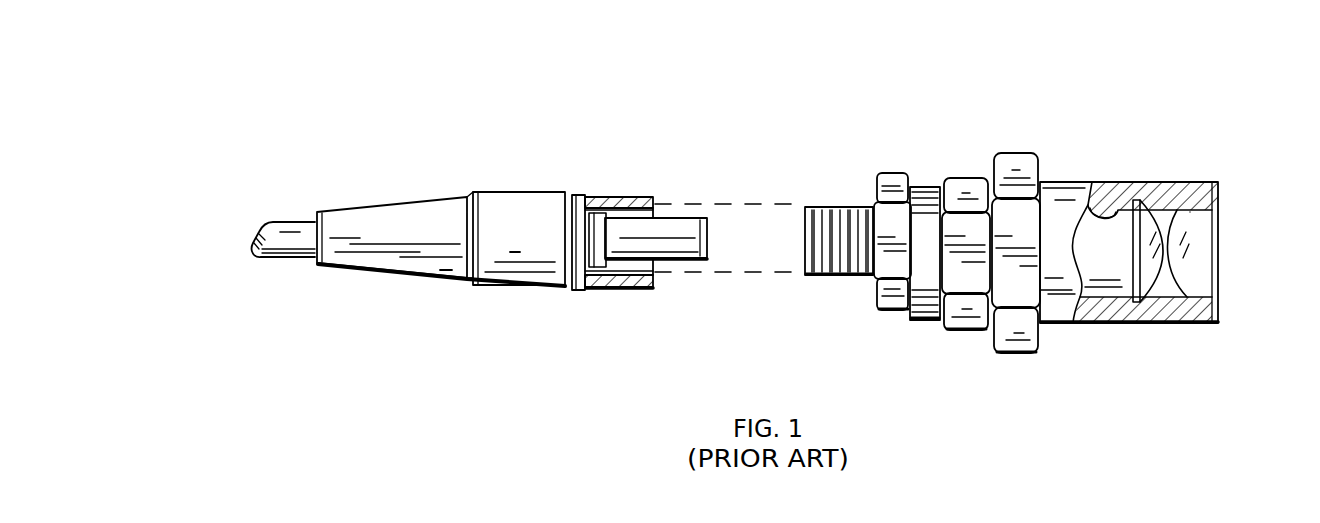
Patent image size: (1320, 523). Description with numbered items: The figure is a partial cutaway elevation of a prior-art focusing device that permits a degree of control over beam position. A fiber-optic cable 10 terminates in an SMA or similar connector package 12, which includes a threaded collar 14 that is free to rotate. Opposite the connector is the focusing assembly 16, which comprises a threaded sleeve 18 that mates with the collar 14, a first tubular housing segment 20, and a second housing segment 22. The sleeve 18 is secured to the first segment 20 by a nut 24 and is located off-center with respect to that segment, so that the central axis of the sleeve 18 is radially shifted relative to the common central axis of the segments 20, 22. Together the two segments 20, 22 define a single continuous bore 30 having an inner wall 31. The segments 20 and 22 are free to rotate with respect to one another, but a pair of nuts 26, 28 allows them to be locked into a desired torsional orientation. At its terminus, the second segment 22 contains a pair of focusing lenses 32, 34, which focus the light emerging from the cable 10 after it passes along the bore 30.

The fiber-optic cable 10 is at (296, 258).
The connector package 12 is at (440, 213).
The threaded collar 14 is at (578, 196).
The focusing assembly 16 is at (1127, 84).
The threaded sleeve 18 is at (836, 208).
The first tubular housing segment 20 is at (925, 187).
The second housing segment 22 is at (1170, 182).
The nut 24 is at (893, 173).
The nut 26 is at (962, 331).
The nut 28 is at (1023, 353).
The bore 30 is at (1100, 280).
The inner wall 31 is at (1112, 213).
The focusing lens 32 is at (1143, 294).
The focusing lens 34 is at (1205, 253).